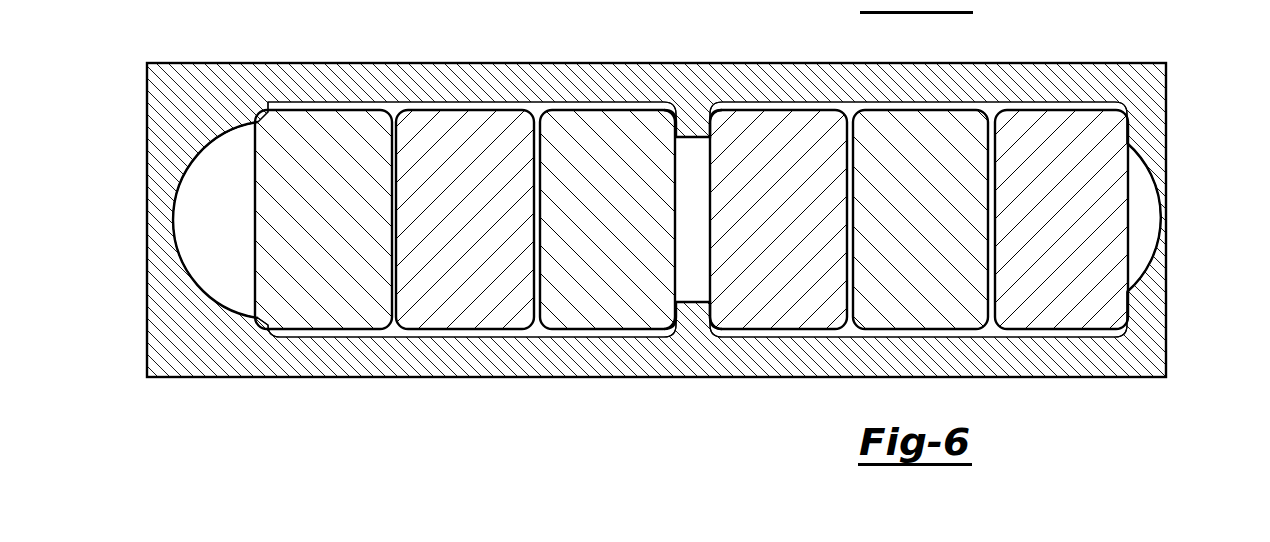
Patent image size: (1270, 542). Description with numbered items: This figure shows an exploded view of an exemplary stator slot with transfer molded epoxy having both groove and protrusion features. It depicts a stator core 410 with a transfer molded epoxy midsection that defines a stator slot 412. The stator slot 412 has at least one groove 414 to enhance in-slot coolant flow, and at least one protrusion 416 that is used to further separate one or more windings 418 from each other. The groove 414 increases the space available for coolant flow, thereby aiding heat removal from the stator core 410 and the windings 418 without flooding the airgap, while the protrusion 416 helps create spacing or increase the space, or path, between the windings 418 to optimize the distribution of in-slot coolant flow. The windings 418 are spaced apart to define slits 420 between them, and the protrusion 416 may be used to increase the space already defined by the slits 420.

The stator core 410 is at (1046, 63).
The stator slot 412 is at (1121, 112).
The groove 414 is at (219, 210).
The protrusion 416 is at (694, 128).
The winding 418 is at (481, 173).
The slit 420 is at (851, 142).